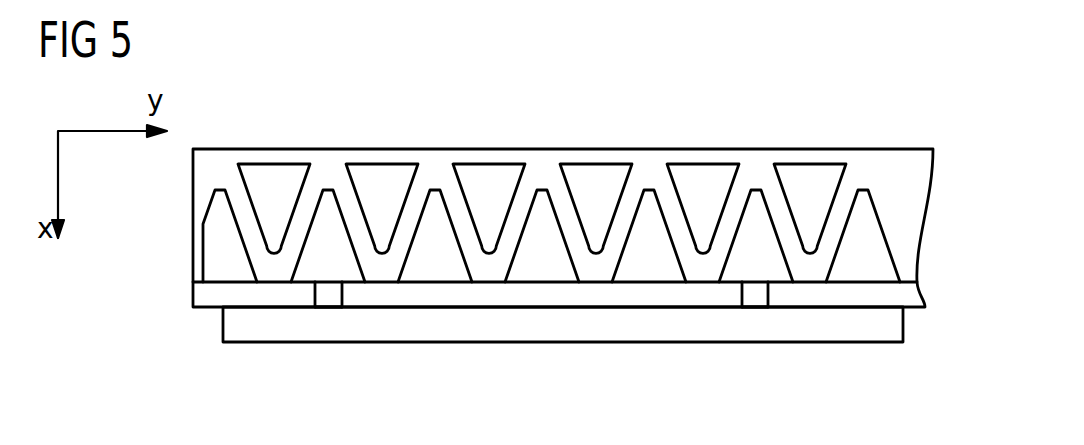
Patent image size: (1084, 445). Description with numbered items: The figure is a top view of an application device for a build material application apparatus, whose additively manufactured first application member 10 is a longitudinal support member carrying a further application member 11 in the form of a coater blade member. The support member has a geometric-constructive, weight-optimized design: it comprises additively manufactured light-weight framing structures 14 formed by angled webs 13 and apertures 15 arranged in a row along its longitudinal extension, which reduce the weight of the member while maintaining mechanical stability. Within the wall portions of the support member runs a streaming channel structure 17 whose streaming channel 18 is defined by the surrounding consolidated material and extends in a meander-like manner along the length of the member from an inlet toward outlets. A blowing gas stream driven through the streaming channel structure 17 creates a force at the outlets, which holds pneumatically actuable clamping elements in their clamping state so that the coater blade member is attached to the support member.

The first application member 10 is at (887, 172).
The further application member 11 is at (545, 327).
The angled webs 13 is at (562, 200).
The light-weight framing structures 14 is at (488, 178).
The apertures 15 is at (378, 177).
The streaming channel structure 17 is at (555, 189).
The streaming channel 18 is at (643, 293).